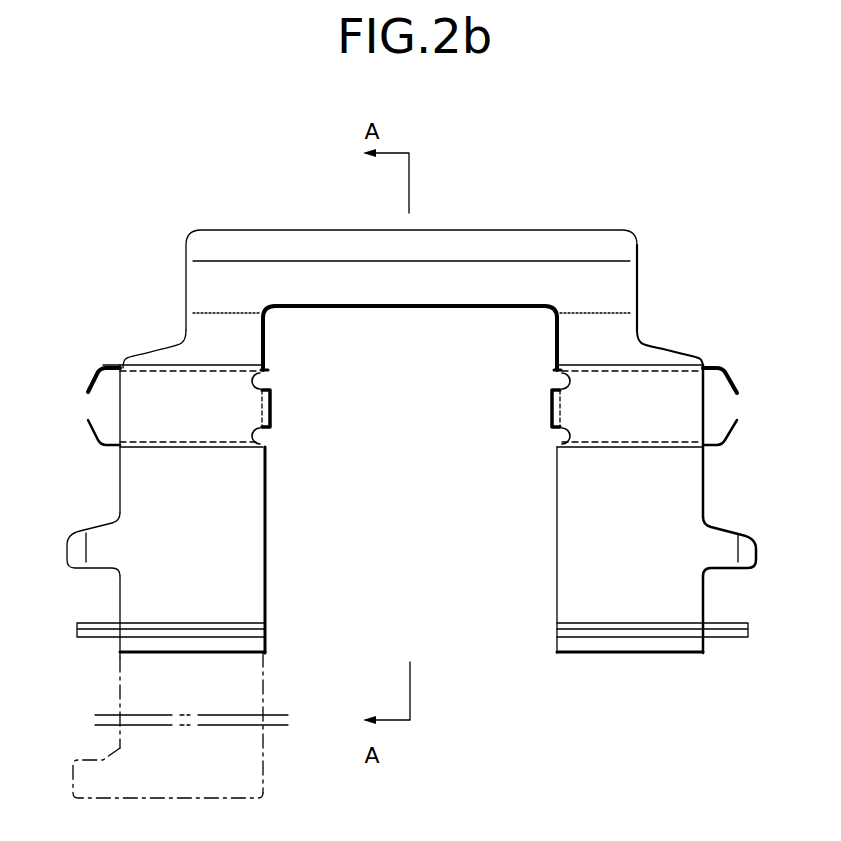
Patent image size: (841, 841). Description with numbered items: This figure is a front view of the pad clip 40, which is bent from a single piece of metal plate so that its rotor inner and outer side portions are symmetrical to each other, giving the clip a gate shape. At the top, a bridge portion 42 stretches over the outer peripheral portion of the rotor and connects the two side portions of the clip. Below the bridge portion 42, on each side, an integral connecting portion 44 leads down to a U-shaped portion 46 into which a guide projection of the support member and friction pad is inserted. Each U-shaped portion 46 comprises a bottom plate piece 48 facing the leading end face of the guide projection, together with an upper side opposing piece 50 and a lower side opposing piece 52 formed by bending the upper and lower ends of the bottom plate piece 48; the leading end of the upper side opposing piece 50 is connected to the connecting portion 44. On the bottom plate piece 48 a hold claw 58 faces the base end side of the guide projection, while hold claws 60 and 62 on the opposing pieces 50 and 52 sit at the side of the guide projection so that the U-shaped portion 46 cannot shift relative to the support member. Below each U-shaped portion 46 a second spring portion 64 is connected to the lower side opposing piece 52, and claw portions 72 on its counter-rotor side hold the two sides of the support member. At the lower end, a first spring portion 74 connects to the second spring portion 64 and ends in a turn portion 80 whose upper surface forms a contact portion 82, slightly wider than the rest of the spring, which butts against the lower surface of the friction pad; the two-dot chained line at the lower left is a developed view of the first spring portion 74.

The pad clip 40 is at (176, 264).
The bridge portion 42 is at (500, 230).
The connecting portion 44 is at (186, 330).
The U-shaped portion 46 is at (240, 458).
The bottom plate piece 48 is at (260, 430).
The upper side opposing piece 50 is at (263, 370).
The lower side opposing piece 52 is at (138, 447).
The hold claw 58 is at (272, 397).
The hold claw 60 is at (90, 385).
The hold claw 62 is at (88, 430).
The second spring portion 64 is at (266, 575).
The claw portion 72 is at (73, 568).
The first spring portion 74 is at (118, 690).
The turn portion 80 is at (266, 648).
The contact portion 82 is at (187, 623).